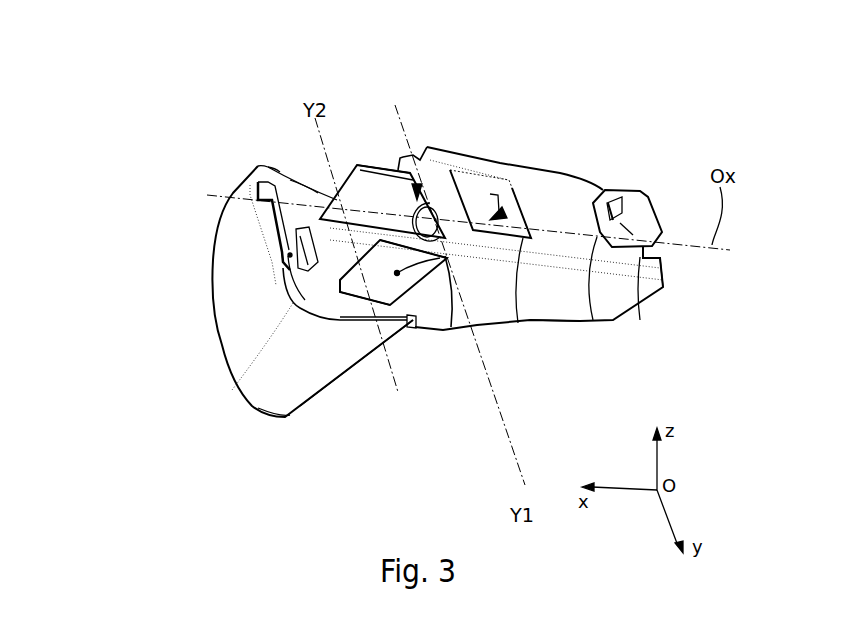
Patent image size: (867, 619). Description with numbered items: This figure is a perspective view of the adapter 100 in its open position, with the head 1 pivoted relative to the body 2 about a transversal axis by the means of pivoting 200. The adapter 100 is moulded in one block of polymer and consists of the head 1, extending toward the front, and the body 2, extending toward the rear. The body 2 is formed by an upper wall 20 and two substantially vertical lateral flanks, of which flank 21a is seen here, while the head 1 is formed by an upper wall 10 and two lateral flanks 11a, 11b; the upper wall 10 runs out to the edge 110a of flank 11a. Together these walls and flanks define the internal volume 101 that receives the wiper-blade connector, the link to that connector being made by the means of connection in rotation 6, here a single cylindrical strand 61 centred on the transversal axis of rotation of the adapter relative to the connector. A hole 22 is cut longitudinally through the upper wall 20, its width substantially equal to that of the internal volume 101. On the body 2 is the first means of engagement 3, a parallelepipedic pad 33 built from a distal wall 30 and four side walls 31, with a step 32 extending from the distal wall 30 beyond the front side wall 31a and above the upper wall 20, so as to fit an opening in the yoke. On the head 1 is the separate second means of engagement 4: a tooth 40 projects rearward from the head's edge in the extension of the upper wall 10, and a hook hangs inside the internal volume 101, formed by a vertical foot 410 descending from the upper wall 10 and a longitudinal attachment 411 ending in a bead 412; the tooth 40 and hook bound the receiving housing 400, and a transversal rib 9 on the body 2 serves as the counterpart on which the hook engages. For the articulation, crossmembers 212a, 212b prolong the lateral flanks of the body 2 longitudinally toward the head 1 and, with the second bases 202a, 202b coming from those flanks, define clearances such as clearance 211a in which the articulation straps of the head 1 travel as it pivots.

The head 1 is at (203, 242).
The body 2 is at (510, 350).
The first means of engagement 3 is at (645, 195).
The second means of engagement 4 is at (268, 247).
The means of connection in rotation 6 is at (420, 152).
The rib 9 is at (443, 202).
The upper wall of the head 10 is at (244, 301).
The lateral flank of the head 11a is at (319, 369).
The lateral flank of the head 11b is at (299, 190).
The upper wall of the body 20 is at (567, 219).
The lateral flank of the body 21a is at (557, 304).
The hole 22 is at (500, 180).
The distal wall 30 is at (637, 212).
The side walls 31 is at (645, 322).
The front side wall 31a is at (590, 323).
The step 32 is at (619, 192).
The pad 33 is at (655, 248).
The tooth 40 is at (260, 222).
The strand 61 is at (493, 194).
The adapter 100 is at (235, 420).
The internal volume 101 is at (518, 325).
The edge of the lateral flank 110a is at (300, 406).
The means of pivoting 200 is at (340, 325).
The second base 202a is at (410, 283).
The second base 202b is at (398, 162).
The clearance 211a is at (452, 280).
The crossmember 212a is at (377, 277).
The crossmember 212b is at (396, 204).
The receiving housing 400 is at (273, 180).
The foot 410 is at (292, 270).
The attachment 411 is at (288, 305).
The bead 412 is at (340, 250).